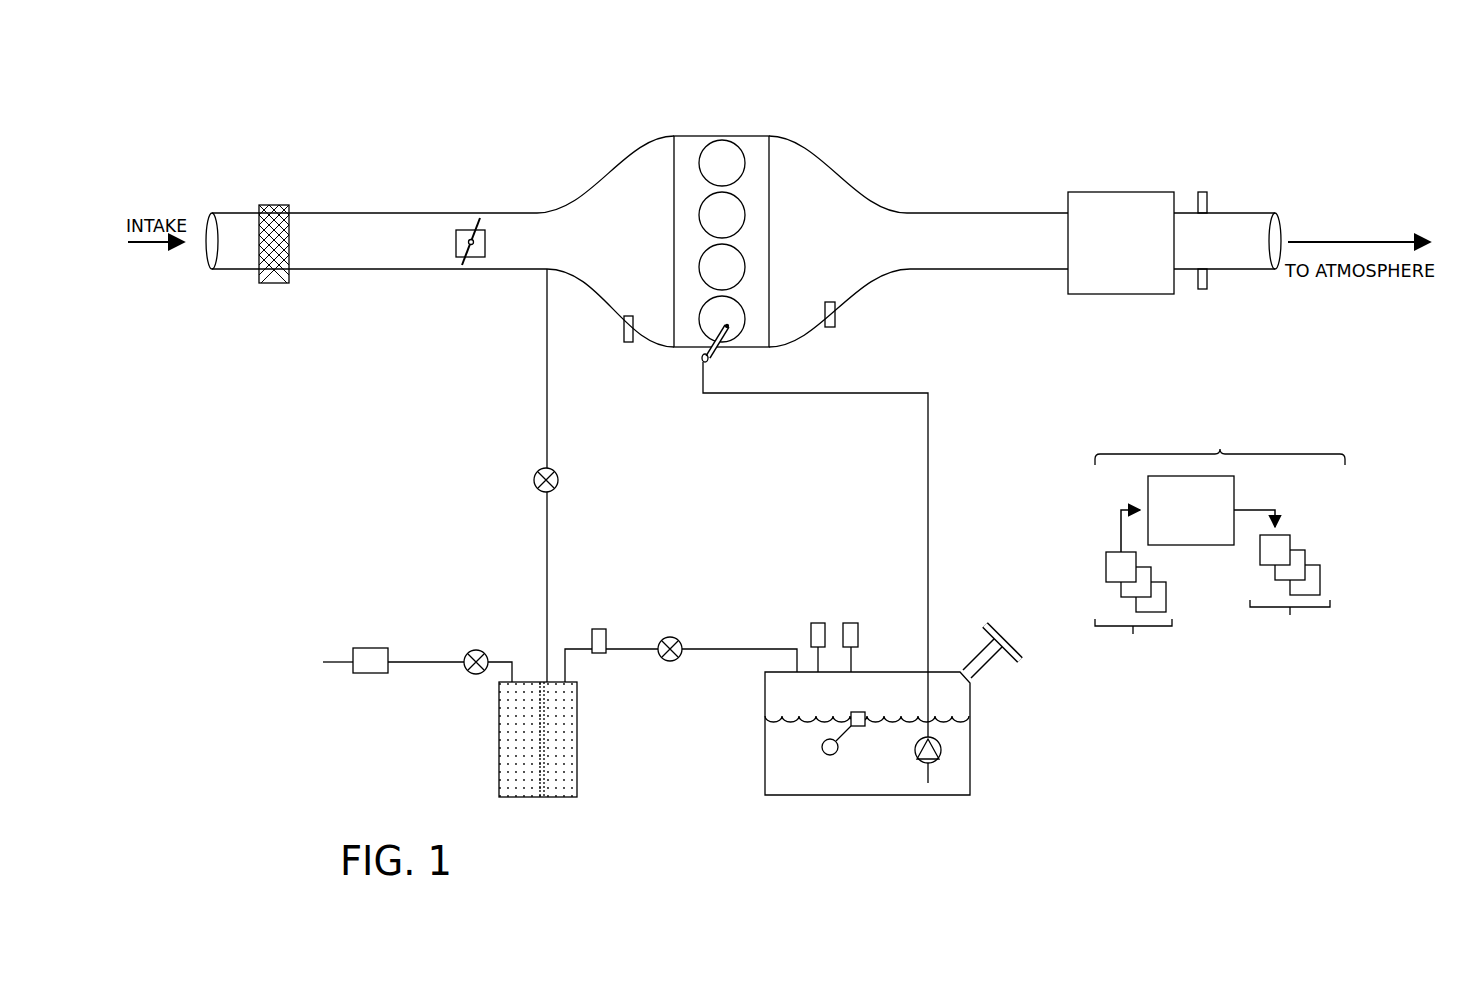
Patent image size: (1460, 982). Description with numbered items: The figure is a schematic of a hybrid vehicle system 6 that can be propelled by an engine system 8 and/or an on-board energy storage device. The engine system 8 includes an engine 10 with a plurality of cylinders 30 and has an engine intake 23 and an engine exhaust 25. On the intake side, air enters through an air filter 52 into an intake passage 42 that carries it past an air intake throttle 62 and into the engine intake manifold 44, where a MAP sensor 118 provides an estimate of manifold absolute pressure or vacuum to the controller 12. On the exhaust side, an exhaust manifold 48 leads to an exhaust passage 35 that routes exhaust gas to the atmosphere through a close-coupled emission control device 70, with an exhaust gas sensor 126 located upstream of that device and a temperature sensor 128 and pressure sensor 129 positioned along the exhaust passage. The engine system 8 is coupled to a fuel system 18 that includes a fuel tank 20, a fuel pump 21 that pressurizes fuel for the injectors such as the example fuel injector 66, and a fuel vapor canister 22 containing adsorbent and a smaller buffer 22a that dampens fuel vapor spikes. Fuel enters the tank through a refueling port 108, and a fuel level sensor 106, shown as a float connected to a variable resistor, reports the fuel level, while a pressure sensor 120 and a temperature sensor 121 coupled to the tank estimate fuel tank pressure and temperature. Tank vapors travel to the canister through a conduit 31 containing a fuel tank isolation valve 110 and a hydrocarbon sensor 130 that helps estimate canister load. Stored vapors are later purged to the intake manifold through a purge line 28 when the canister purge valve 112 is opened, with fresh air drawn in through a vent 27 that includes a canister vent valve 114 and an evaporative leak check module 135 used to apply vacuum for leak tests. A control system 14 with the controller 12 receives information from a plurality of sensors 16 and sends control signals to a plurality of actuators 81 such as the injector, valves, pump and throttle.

The hybrid vehicle system 6 is at (224, 114).
The engine system 8 is at (1307, 109).
The intake passage 42 is at (238, 272).
The air filter 52 is at (274, 205).
The air intake throttle 62 is at (485, 255).
The engine intake manifold 44 is at (605, 241).
The engine intake 23 is at (599, 165).
The engine 10 is at (770, 223).
The cylinders 30 is at (742, 155).
The fuel injector 66 is at (716, 365).
The MAP sensor 118 is at (624, 322).
The exhaust manifold 48 is at (918, 241).
The engine exhaust 25 is at (882, 174).
The exhaust gas sensor 126 is at (835, 308).
The emission control device 70 is at (1108, 192).
The exhaust passage 35 is at (1253, 212).
The pressure sensor 129 is at (1202, 192).
The temperature sensor 128 is at (1202, 289).
The purge line 28 is at (547, 435).
The canister purge valve 112 is at (553, 474).
The fuel vapor canister 22 is at (515, 798).
The buffer 22a is at (562, 798).
The evaporative leak check module 135 is at (362, 648).
The vent 27 is at (447, 662).
The canister vent valve 114 is at (474, 650).
The conduit 31 is at (722, 649).
The hydrocarbon sensor 130 is at (599, 629).
The fuel tank isolation valve 110 is at (672, 638).
The fuel tank 20 is at (765, 795).
The fuel system 18 is at (1012, 820).
The temperature sensor 121 is at (818, 623).
The pressure sensor 120 is at (858, 633).
The fuel level sensor 106 is at (855, 712).
The fuel pump 21 is at (940, 762).
The refueling port 108 is at (998, 638).
The control system 14 is at (1220, 433).
The controller 12 is at (1191, 510).
The sensors 16 is at (1133, 590).
The actuators 81 is at (1283, 582).